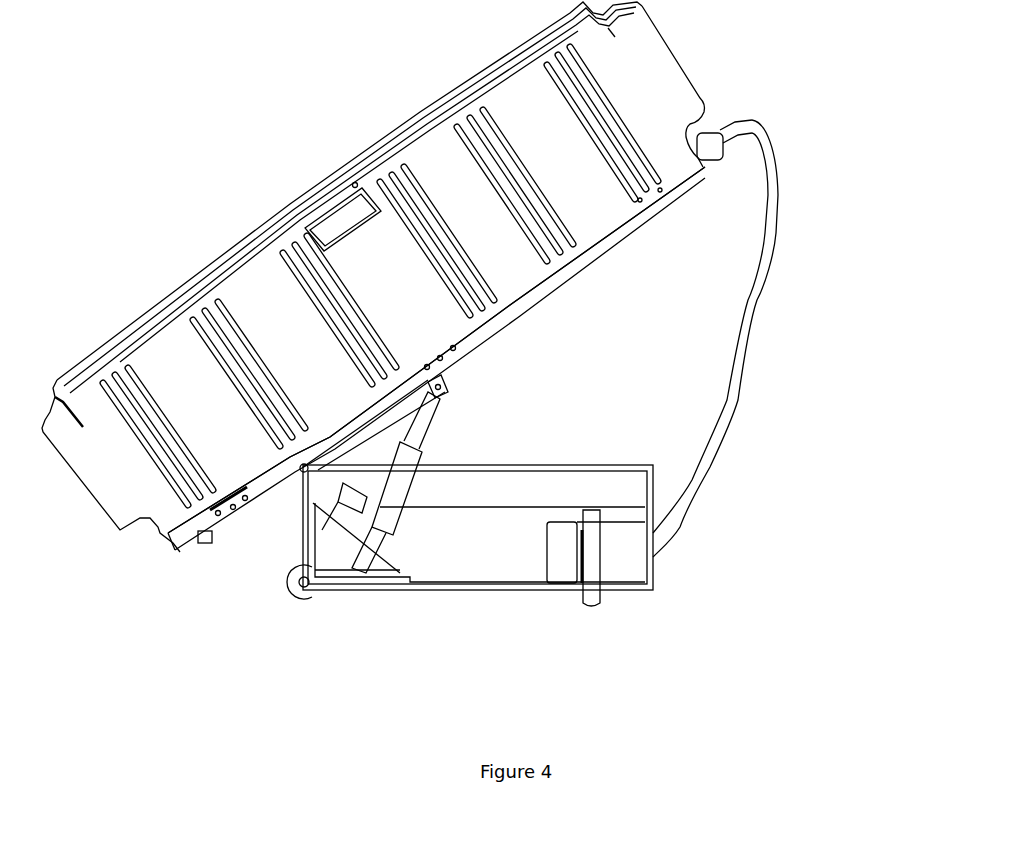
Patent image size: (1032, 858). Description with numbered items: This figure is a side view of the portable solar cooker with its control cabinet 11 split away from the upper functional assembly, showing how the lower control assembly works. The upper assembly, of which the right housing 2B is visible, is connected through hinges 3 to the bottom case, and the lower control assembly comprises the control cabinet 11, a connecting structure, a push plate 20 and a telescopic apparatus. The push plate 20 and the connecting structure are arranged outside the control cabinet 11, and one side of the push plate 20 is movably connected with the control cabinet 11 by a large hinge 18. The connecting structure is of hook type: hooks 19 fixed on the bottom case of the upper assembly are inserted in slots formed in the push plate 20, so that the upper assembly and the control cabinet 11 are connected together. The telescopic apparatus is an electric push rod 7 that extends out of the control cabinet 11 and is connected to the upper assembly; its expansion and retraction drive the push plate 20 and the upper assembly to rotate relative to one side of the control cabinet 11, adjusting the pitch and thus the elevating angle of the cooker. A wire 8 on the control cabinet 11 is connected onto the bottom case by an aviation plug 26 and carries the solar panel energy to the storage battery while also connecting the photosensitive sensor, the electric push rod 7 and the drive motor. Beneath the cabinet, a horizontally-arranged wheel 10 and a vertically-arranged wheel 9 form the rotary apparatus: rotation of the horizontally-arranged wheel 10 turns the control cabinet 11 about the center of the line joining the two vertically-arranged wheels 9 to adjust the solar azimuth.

The right housing 2B is at (630, 103).
The aviation plug 26 is at (730, 125).
The hinge 3 is at (703, 170).
The electric push rod 7 is at (420, 440).
The wire 8 is at (745, 392).
The horizontally-arranged wheel 10 is at (587, 558).
The control cabinet 11 is at (653, 583).
The large hinge 18 is at (300, 465).
The hook 19 is at (304, 470).
The push plate 20 is at (320, 470).
The vertically-arranged wheel 9 is at (308, 600).